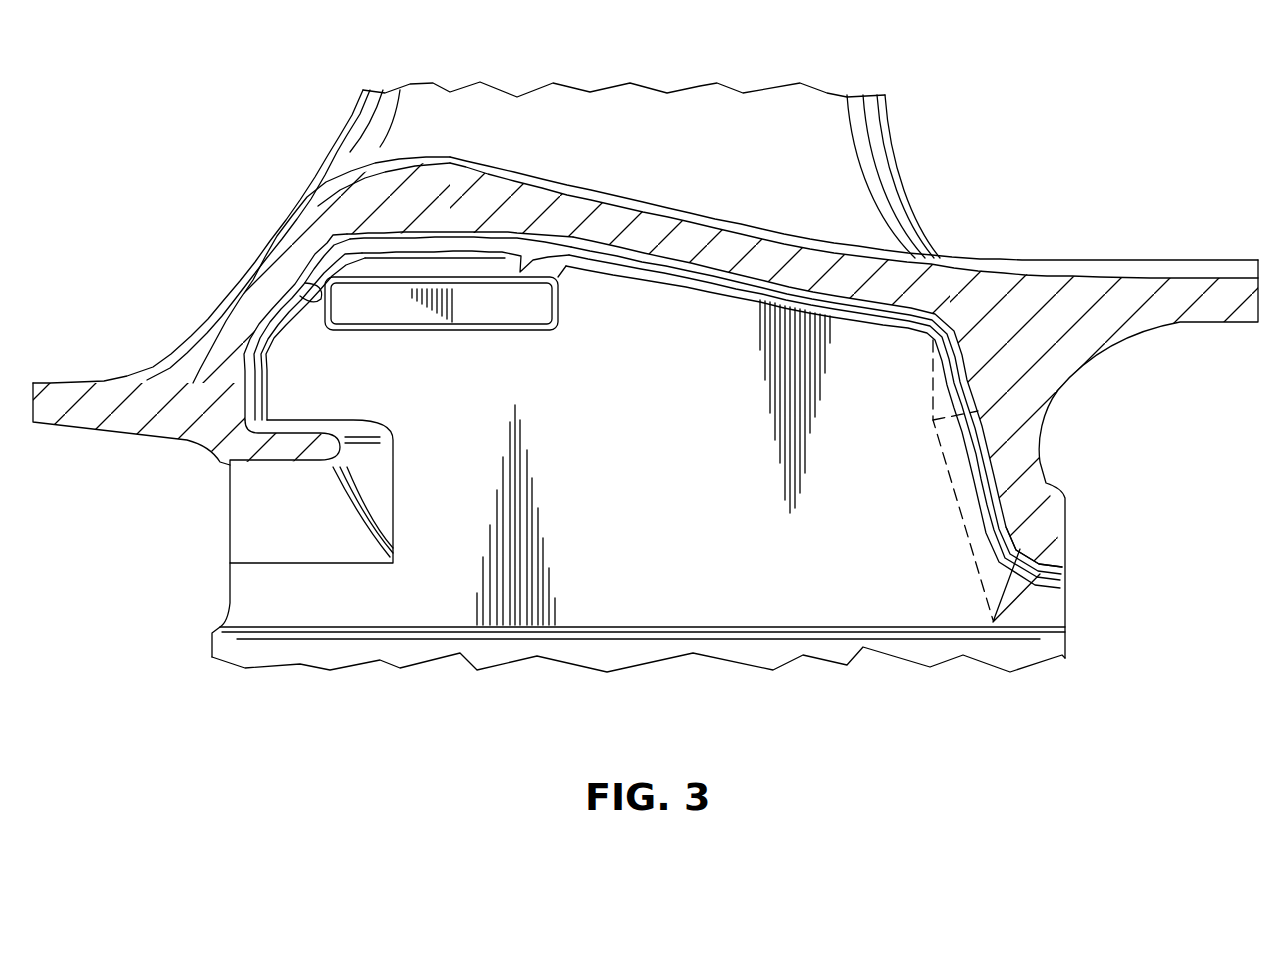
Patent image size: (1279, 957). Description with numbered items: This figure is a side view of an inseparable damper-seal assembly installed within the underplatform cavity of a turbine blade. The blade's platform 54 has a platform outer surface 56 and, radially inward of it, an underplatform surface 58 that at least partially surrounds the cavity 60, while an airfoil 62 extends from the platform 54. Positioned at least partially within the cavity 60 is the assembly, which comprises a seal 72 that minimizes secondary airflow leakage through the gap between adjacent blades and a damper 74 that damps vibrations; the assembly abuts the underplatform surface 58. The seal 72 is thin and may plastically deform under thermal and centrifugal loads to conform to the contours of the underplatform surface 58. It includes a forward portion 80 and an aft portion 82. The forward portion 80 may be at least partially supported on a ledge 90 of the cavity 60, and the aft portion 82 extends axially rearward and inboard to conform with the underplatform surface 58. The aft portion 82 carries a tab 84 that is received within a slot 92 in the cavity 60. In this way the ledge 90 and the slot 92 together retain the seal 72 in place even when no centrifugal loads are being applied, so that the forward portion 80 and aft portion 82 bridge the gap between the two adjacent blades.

The platform 54 is at (1124, 302).
The platform outer surface 56 is at (1027, 262).
The underplatform surface 58 is at (760, 293).
The cavity 60 is at (683, 542).
The airfoil 62 is at (830, 148).
The seal 72 is at (905, 305).
The damper 74 is at (372, 278).
The forward portion 80 is at (283, 358).
The aft portion 82 is at (982, 511).
The tab 84 is at (1030, 558).
The ledge 90 is at (303, 432).
The slot 92 is at (1025, 624).